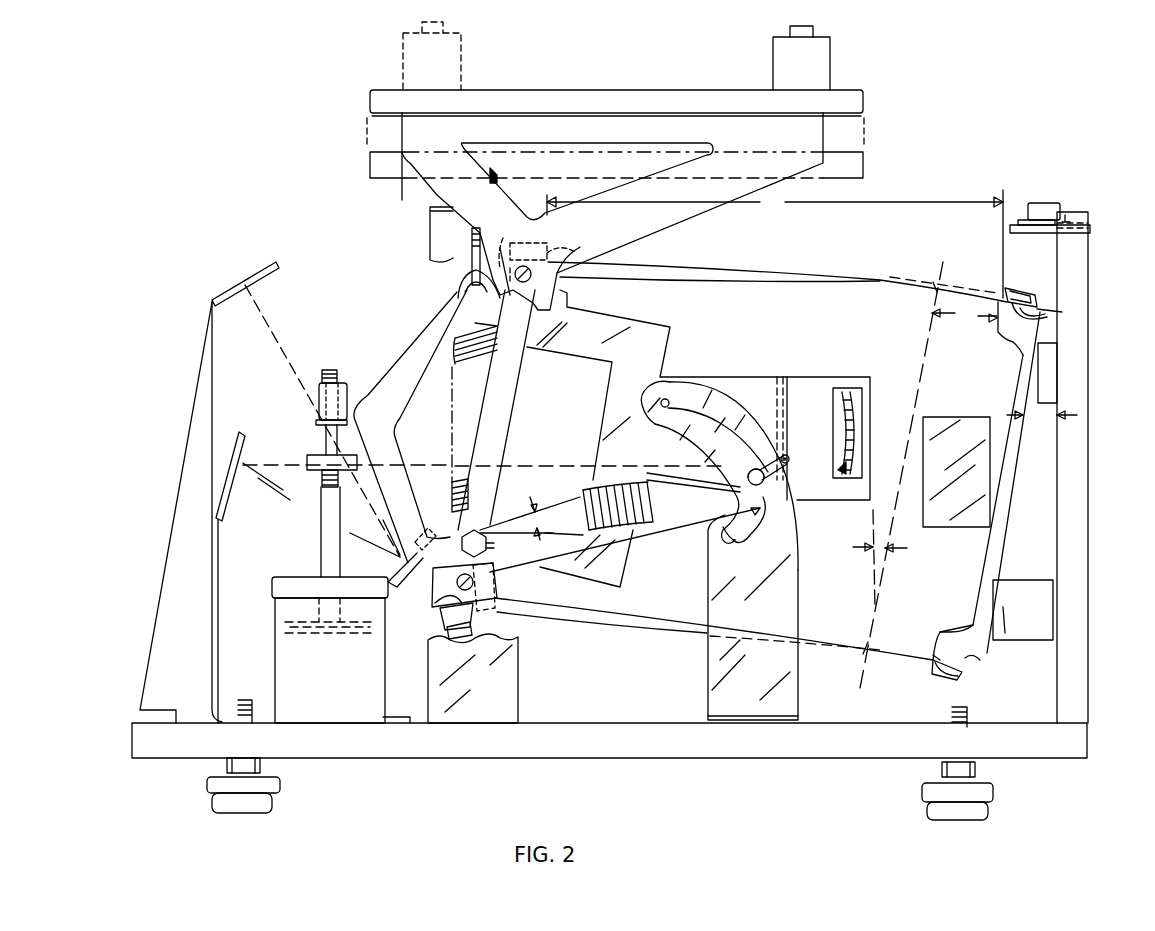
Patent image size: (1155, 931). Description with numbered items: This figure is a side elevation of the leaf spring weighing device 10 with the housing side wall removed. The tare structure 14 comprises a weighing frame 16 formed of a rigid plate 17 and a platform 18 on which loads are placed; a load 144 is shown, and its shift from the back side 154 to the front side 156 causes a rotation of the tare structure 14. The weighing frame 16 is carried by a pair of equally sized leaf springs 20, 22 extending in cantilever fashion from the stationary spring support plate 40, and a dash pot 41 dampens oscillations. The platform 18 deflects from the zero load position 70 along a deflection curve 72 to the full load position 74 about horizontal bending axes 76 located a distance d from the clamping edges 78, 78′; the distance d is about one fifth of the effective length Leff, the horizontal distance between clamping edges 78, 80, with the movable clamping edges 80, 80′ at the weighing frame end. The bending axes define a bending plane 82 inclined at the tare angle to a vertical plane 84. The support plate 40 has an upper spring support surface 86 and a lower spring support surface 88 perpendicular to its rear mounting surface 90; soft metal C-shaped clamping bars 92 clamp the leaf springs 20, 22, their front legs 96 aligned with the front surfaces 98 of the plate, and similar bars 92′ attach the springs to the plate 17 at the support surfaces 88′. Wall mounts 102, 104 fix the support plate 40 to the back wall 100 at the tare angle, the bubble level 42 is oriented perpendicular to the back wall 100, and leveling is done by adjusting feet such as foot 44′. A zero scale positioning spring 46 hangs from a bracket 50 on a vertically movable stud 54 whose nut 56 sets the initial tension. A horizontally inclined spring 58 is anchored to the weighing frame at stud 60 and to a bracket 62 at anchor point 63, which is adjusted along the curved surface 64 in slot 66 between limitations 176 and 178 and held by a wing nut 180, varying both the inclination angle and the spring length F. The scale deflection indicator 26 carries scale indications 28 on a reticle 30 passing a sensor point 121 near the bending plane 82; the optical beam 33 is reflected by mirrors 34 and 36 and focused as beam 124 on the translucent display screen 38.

The weighing device 10 is at (973, 183).
The tare structure 14 is at (556, 632).
The weighing frame 16 is at (417, 247).
The rigid plate 17 is at (515, 406).
The platform 18 is at (585, 88).
The leaf spring 20 is at (785, 280).
The leaf spring 22 is at (642, 632).
The scale deflection indicator 26 is at (614, 318).
The scale indications 28 is at (852, 408).
The reticle 30 is at (850, 468).
The optical beam 33 is at (555, 464).
The mirror 34 is at (270, 428).
The mirror 36 is at (392, 563).
The translucent display screen 38 is at (215, 290).
The stationary leaf spring frame 40 is at (997, 560).
The dash pot 41 is at (278, 660).
The bubble level 42 is at (1044, 203).
The foot 44′ is at (250, 812).
The zero scale positioning spring 46 is at (452, 365).
The bracket 50 is at (516, 703).
The vertically movable stud 54 is at (472, 263).
The nut 56 is at (497, 178).
The horizontally inclined spring 58 is at (645, 528).
The stud 60 is at (478, 530).
The bracket 62 is at (790, 620).
The anchor point 63 is at (766, 478).
The curved surface 64 is at (695, 452).
The slot 66 is at (720, 408).
The zero load position 70 is at (354, 113).
The deflection curve 72 is at (368, 130).
The full load position 74 is at (354, 179).
The horizontal bending axis 76 is at (935, 284).
The clamping edge 78 is at (1003, 290).
The clamping edge 78′ is at (933, 660).
The movable clamping edge 80 is at (575, 256).
The pivot 80′ is at (486, 600).
The bending plane 82 is at (920, 345).
The vertical plane 84 is at (872, 522).
The upper spring support surface 86 is at (1090, 312).
The lower spring support surface 88 is at (982, 664).
The bearing block 88′ is at (431, 595).
The rear mounting surface 90 is at (1000, 527).
The C-shaped clamping bars 92 is at (1015, 292).
The clamping bars 92′ is at (543, 242).
The front legs 96 is at (1037, 325).
The front surfaces 98 is at (995, 332).
The back wall 100 is at (1057, 450).
The wall mount 102 is at (1057, 388).
The wall mount 104 is at (1048, 614).
The sensor point 121 is at (838, 460).
The light beam 124 is at (275, 326).
The load 144 is at (461, 50).
The back side 154 is at (881, 43).
The front side 156 is at (392, 33).
The limitation 176 is at (735, 540).
The limitation 178 is at (662, 392).
The wing nut 180 is at (788, 456).
The spring length F is at (620, 534).
The effective length Leff is at (775, 202).
The distance d is at (964, 315).